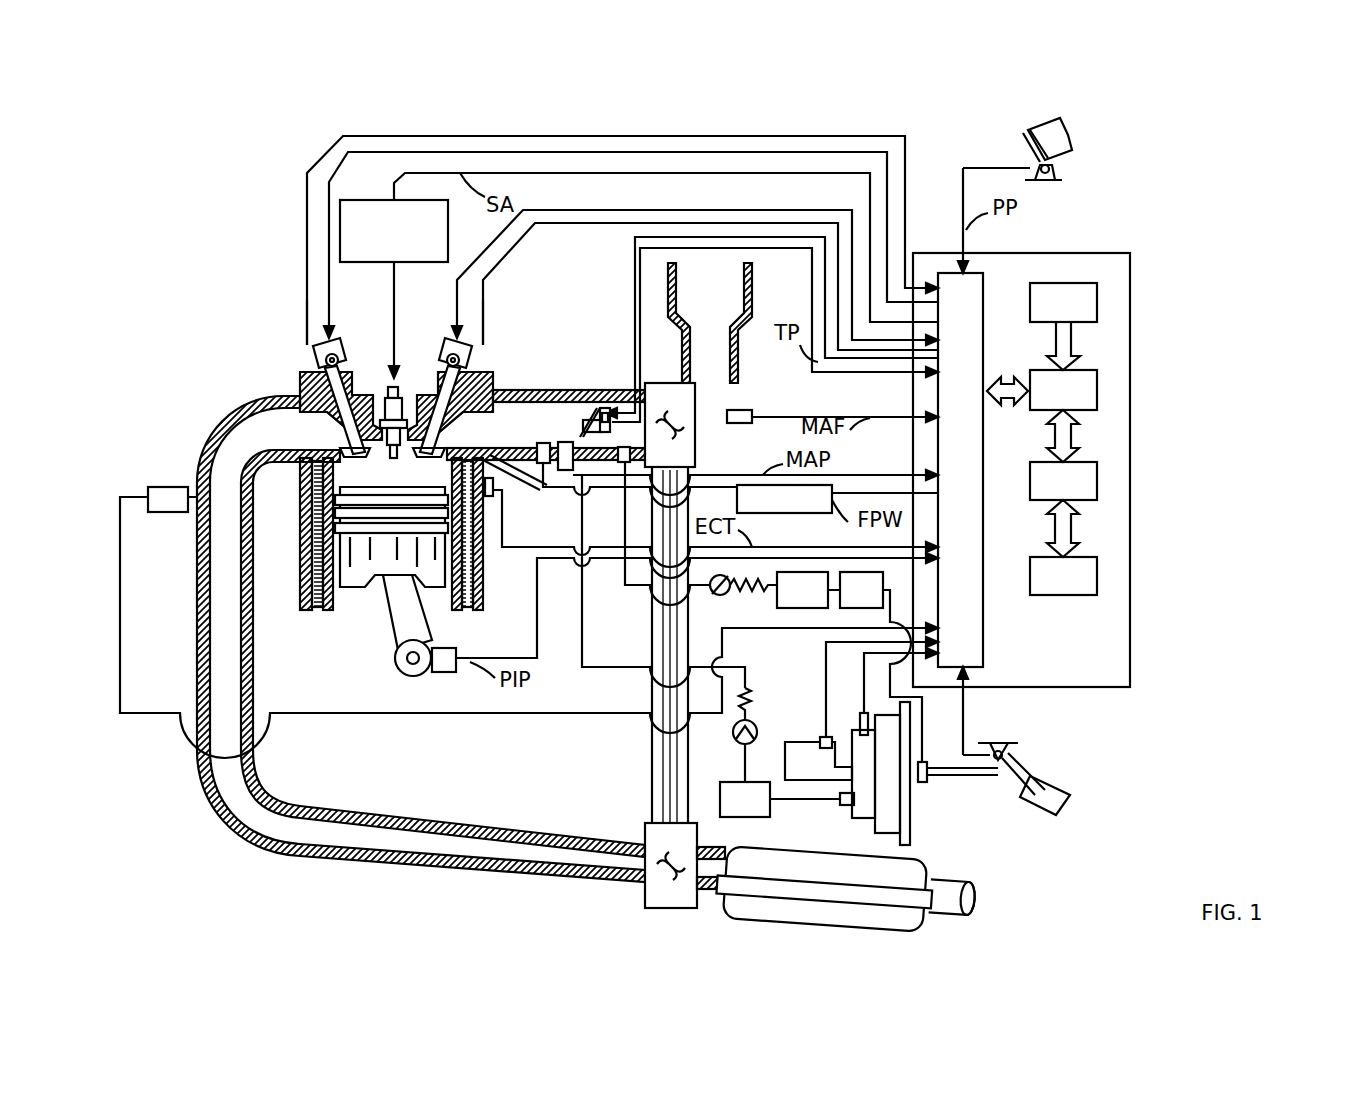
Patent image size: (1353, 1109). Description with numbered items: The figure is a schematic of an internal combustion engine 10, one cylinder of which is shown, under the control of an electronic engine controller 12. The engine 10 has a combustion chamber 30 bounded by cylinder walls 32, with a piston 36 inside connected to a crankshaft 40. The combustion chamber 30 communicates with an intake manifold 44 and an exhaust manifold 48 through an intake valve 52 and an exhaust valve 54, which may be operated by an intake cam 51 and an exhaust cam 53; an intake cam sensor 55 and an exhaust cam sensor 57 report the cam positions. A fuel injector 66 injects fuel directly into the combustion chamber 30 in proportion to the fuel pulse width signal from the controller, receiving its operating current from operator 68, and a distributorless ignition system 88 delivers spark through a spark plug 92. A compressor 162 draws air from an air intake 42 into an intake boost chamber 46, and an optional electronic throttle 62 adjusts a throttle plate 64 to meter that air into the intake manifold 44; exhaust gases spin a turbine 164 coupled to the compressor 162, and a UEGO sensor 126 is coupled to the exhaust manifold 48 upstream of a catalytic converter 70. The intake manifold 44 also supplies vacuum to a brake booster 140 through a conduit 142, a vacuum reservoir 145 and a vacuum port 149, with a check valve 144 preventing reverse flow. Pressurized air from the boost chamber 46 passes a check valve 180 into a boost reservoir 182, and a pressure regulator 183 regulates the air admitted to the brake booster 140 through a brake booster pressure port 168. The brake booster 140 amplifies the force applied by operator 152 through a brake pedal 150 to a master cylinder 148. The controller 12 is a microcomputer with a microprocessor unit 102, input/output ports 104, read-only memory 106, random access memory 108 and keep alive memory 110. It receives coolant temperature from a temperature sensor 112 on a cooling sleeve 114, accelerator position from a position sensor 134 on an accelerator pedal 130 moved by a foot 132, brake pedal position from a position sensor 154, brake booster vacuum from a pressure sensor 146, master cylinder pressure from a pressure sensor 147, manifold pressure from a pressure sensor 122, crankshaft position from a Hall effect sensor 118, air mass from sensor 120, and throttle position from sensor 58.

The internal combustion engine 10 is at (236, 329).
The electronic engine controller 12 is at (1122, 253).
The combustion chamber 30 is at (323, 557).
The cylinder walls 32 is at (335, 600).
The piston 36 is at (375, 565).
The crankshaft 40 is at (398, 668).
The air intake 42 is at (710, 323).
The intake manifold 44 is at (569, 413).
The intake boost chamber 46 is at (546, 442).
The exhaust manifold 48 is at (421, 639).
The intake cam 51 is at (450, 338).
The intake valve 52 is at (440, 450).
The exhaust cam 53 is at (335, 338).
The exhaust valve 54 is at (350, 445).
The intake cam sensor 55 is at (468, 370).
The exhaust cam sensor 57 is at (312, 350).
The throttle position sensor 58 is at (614, 405).
The electronic throttle 62 is at (582, 412).
The throttle plate 64 is at (600, 405).
The fuel injector 66 is at (540, 492).
The operator 68 is at (815, 513).
The catalytic converter 70 is at (725, 915).
The distributorless ignition system 88 is at (355, 200).
The spark plug 92 is at (400, 385).
The microprocessor unit 102 is at (1097, 385).
The input/output ports 104 is at (985, 287).
The read-only memory 106 is at (1097, 300).
The random access memory 108 is at (1097, 478).
The keep alive memory 110 is at (1097, 572).
The temperature sensor 112 is at (495, 500).
The cooling sleeve 114 is at (486, 592).
The Hall effect sensor 118 is at (445, 672).
The air mass sensor 120 is at (752, 414).
The pressure sensor 122 is at (548, 442).
The Universal Exhaust Gas Oxygen sensor 126 is at (148, 494).
The accelerator pedal 130 is at (1028, 148).
The foot 132 is at (1068, 133).
The position sensor 134 is at (1060, 172).
The brake booster 140 is at (855, 818).
The conduit 142 is at (580, 648).
The check valve 144 is at (733, 738).
The vacuum reservoir 145 is at (780, 799).
The pressure sensor 146 is at (860, 718).
The pressure sensor 147 is at (822, 736).
The master cylinder 148 is at (785, 742).
The vacuum port 149 is at (840, 800).
The brake pedal 150 is at (1035, 800).
The operator 152 is at (1058, 780).
The position sensor 154 is at (992, 749).
The compressor 162 is at (672, 383).
The turbine 164 is at (652, 823).
The brake booster pressure port 168 is at (925, 766).
The check valve 180 is at (719, 595).
The boost reservoir 182 is at (802, 590).
The pressure regulator 183 is at (875, 667).